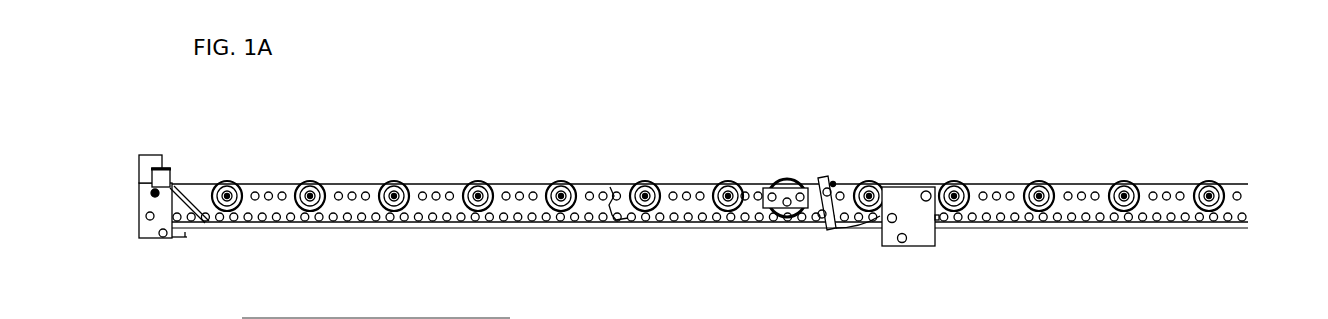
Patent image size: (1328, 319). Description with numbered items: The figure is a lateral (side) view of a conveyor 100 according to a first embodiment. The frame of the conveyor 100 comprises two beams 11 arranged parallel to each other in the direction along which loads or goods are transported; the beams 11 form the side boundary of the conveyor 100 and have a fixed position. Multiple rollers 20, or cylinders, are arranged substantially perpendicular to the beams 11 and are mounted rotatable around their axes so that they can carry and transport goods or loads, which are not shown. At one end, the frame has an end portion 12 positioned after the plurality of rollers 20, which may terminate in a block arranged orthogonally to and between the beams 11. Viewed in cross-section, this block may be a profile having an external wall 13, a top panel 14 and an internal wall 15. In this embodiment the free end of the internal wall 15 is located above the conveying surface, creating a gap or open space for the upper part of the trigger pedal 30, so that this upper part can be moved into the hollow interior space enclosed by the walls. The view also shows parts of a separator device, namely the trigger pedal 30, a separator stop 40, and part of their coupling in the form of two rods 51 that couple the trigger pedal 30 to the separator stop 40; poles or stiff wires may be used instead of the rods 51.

The conveyor 100 is at (697, 288).
The beam 11 is at (1145, 228).
The end portion 12 is at (137, 160).
The external wall 13 is at (137, 166).
The top panel 14 is at (148, 156).
The internal wall 15 is at (165, 167).
The rollers 20 is at (693, 173).
The trigger pedal 30 is at (172, 174).
The separator stop 40 is at (894, 180).
The rods 51 is at (503, 227).